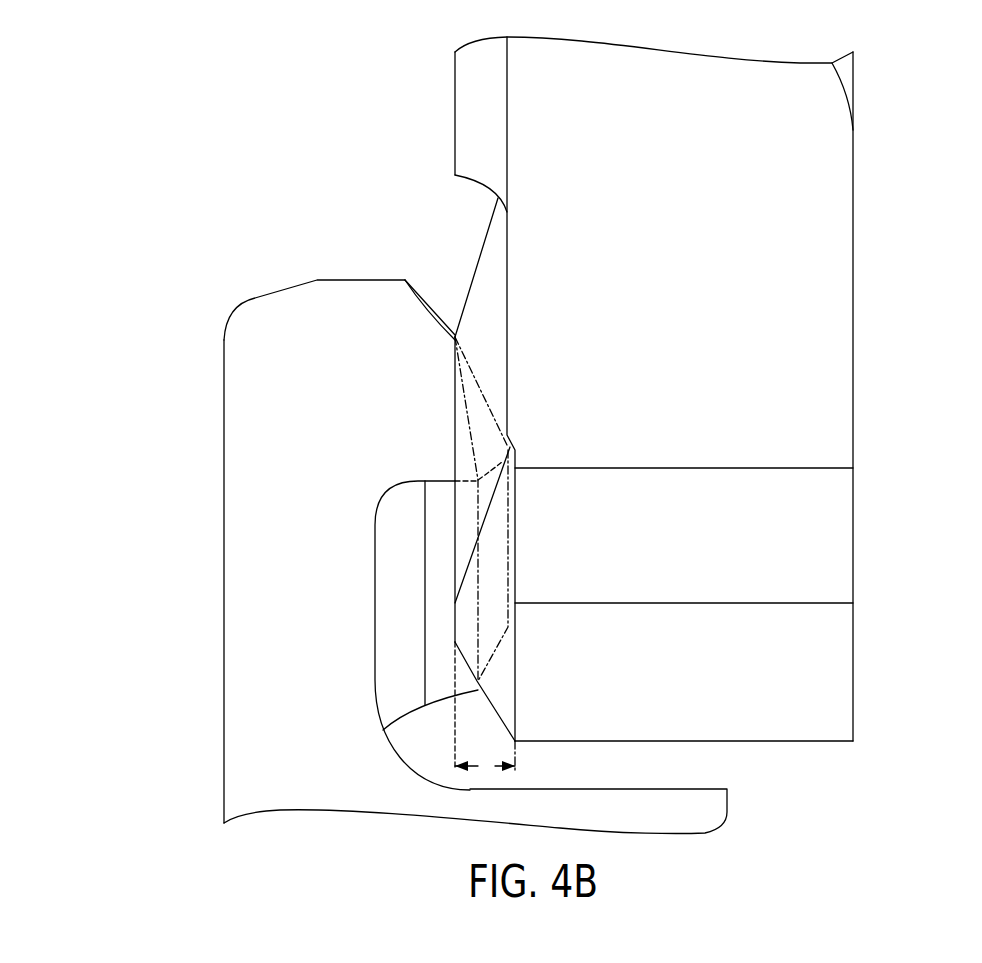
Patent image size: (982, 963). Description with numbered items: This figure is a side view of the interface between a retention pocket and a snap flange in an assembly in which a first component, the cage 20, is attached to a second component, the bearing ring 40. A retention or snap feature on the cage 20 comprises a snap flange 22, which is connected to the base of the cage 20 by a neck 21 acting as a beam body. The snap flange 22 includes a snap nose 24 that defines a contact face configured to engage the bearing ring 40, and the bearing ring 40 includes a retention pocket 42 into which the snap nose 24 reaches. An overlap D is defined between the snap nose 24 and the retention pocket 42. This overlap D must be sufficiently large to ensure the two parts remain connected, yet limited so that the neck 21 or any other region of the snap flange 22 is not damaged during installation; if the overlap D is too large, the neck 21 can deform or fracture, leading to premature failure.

The cage 20 is at (258, 730).
The neck 21 is at (300, 616).
The snap flange 22 is at (335, 390).
The snap nose 24 is at (462, 441).
The bearing ring 40 is at (808, 410).
The retention pocket 42 is at (488, 366).
The overlap D is at (485, 766).